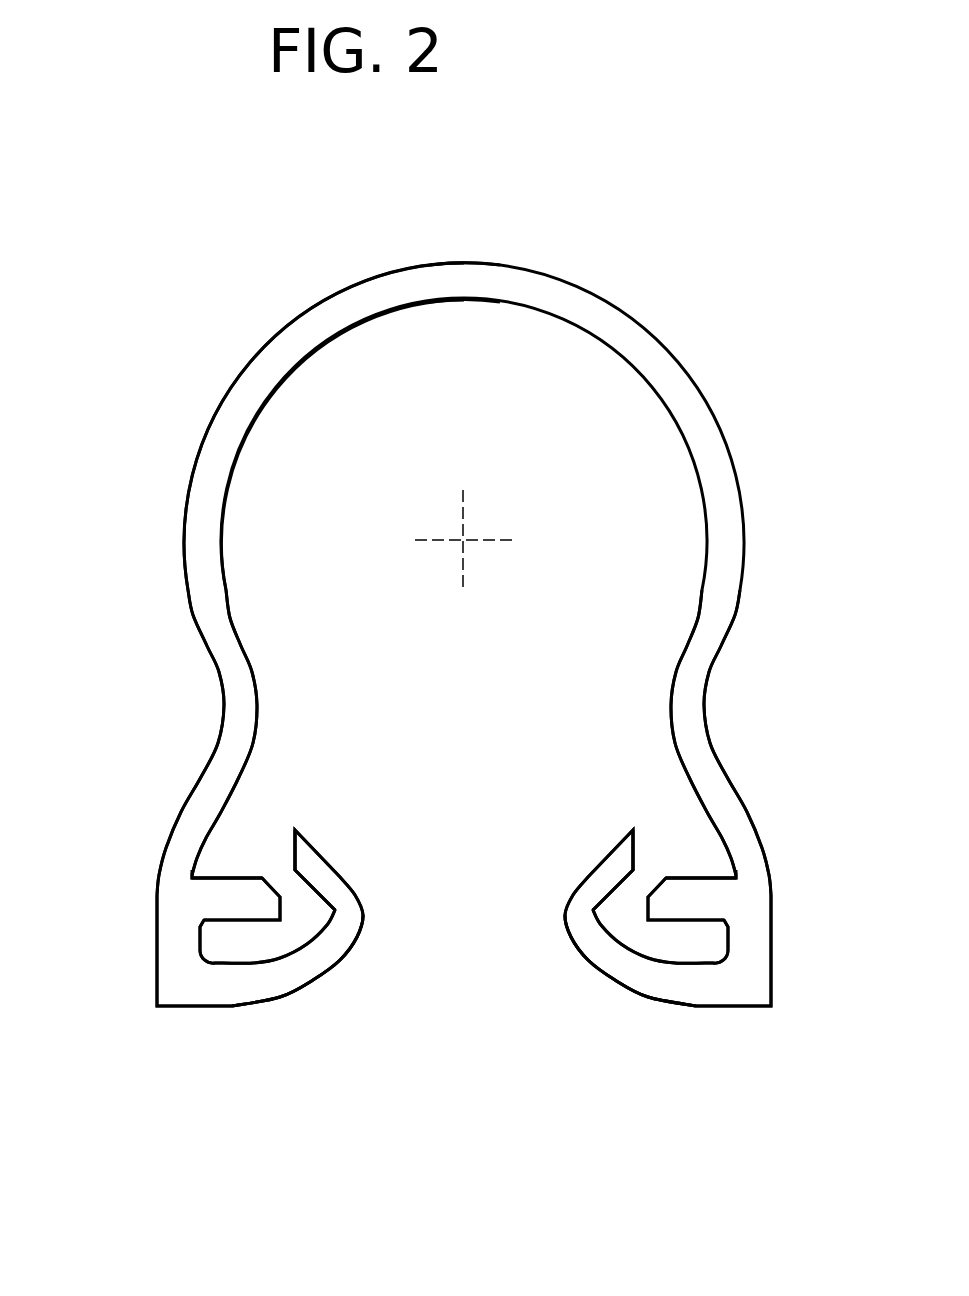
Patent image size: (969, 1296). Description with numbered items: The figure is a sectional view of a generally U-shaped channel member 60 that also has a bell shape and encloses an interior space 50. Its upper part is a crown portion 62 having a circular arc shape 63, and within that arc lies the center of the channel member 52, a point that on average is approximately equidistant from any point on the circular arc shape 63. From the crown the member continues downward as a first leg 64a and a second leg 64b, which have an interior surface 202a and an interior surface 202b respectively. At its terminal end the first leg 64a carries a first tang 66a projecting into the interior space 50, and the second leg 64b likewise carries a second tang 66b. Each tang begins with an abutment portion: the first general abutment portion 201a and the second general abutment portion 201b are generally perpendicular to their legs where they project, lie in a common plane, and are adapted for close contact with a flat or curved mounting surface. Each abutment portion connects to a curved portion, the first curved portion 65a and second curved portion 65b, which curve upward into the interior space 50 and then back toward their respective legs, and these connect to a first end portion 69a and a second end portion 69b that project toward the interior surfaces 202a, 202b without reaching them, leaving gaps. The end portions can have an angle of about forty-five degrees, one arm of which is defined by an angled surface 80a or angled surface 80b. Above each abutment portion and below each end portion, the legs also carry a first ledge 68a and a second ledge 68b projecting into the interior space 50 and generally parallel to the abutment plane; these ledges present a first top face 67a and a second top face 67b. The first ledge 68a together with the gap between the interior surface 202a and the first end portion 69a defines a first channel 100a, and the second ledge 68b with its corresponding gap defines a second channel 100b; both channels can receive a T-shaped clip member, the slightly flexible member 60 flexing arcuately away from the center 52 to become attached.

The interior space 50 is at (400, 469).
The center of the channel member 52 is at (491, 492).
The generally U-shaped channel member 60 is at (727, 388).
The crown portion 62 is at (490, 265).
The circular arc shape 63 is at (382, 260).
The first leg 64a is at (738, 627).
The second leg 64b is at (190, 627).
The first curved portion 65a is at (587, 952).
The second curved portion 65b is at (337, 952).
The first tang 66a is at (606, 1032).
The second tang 66b is at (322, 1032).
The first top face 67a is at (726, 845).
The second top face 67b is at (202, 845).
The first ledge 68a is at (708, 898).
The second ledge 68b is at (218, 898).
The first end portion 69a is at (618, 868).
The second end portion 69b is at (315, 862).
The angled surface 80a is at (618, 868).
The angled surface 80b is at (314, 876).
The first channel 100a is at (696, 812).
The second channel 100b is at (232, 812).
The first general abutment portion 201a is at (725, 993).
The second general abutment portion 201b is at (202, 993).
The interior surface 202a is at (682, 655).
The interior surface 202b is at (247, 655).